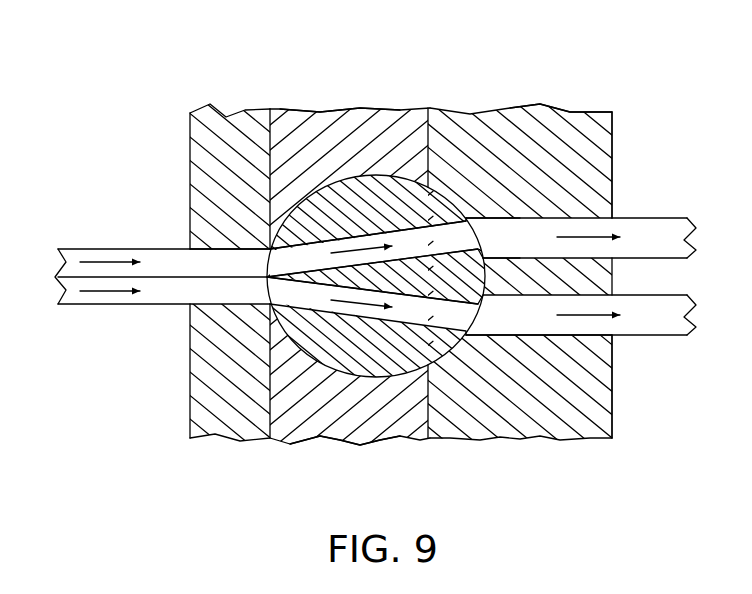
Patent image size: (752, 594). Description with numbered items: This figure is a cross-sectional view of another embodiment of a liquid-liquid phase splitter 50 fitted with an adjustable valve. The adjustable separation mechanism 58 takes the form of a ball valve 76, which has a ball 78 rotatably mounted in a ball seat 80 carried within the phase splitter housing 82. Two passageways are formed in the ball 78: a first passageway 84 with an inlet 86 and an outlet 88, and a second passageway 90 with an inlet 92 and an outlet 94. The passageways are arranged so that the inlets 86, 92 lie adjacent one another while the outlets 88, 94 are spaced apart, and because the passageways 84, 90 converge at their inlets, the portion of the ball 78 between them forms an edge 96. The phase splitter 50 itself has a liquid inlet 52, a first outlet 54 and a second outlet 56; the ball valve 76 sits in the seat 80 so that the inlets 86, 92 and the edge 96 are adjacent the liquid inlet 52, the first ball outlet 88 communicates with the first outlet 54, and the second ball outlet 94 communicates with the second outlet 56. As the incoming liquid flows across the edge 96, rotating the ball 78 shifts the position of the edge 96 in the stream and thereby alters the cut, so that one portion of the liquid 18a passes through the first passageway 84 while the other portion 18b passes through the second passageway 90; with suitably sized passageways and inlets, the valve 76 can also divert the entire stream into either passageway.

The phase splitter 50 is at (374, 290).
The liquid inlet 52 is at (157, 249).
The first outlet 54 is at (647, 336).
The second outlet 56 is at (663, 258).
The adjustable separation mechanism 58 is at (445, 170).
The ball valve 76 is at (342, 165).
The ball 78 is at (353, 377).
The ball seat 80 is at (371, 128).
The phase splitter housing 82 is at (532, 128).
The first passageway 84 is at (275, 432).
The inlet 86 is at (266, 304).
The outlet 88 is at (496, 340).
The second passageway 90 is at (314, 253).
The inlet 92 is at (245, 248).
The outlet 94 is at (480, 230).
The edge 96 is at (267, 277).
The portion of the liquid 18a is at (98, 295).
The portion of the liquid 18b is at (97, 252).